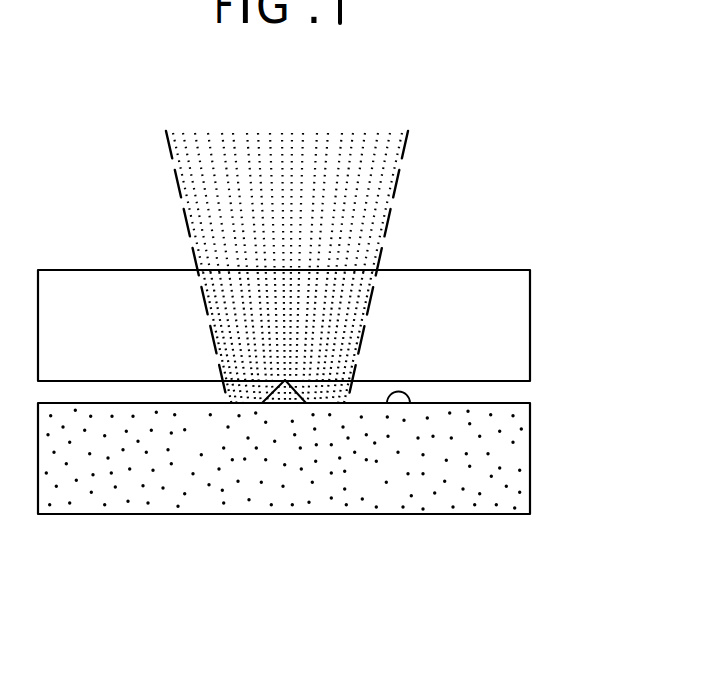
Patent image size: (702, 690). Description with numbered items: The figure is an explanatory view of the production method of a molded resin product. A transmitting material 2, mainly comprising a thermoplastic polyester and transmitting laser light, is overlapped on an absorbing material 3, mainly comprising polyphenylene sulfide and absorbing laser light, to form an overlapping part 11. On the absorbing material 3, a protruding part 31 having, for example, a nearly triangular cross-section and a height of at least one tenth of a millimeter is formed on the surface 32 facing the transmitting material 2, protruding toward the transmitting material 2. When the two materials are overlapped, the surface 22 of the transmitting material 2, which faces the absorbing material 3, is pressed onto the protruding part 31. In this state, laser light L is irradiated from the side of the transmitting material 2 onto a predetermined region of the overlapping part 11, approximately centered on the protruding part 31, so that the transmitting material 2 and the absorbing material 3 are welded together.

The laser light L is at (300, 175).
The overlapping part 11 is at (424, 241).
The transmitting material 2 is at (497, 337).
The absorbing material 3 is at (497, 463).
The protruding part 31 is at (285, 380).
The surface of the transmitting material 22 is at (195, 383).
The surface of the absorbing material 32 is at (410, 403).